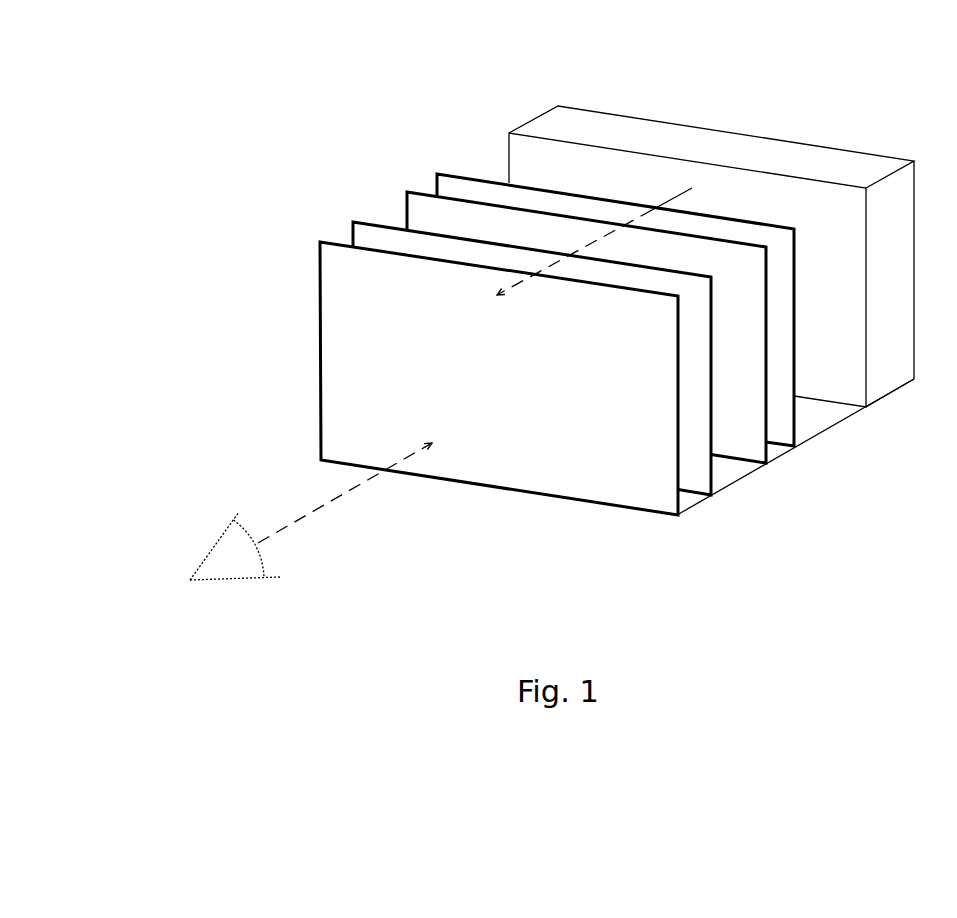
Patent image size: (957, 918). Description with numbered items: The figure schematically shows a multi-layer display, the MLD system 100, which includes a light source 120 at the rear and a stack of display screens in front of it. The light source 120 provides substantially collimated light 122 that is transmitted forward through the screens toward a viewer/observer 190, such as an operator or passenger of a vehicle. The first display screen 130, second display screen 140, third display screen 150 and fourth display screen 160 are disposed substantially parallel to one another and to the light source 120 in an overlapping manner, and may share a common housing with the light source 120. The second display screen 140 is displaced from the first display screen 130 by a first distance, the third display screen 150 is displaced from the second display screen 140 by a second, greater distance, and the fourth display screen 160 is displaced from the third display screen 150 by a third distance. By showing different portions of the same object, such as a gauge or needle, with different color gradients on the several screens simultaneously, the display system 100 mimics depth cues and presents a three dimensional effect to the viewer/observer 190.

The MLD system 100 is at (372, 53).
The light source 120 is at (856, 162).
The substantially collimated light 122 is at (668, 203).
The first display screen 130 is at (335, 282).
The second display screen 140 is at (357, 235).
The third display screen 150 is at (425, 200).
The fourth display screen 160 is at (485, 195).
The viewer/observer 190 is at (222, 540).